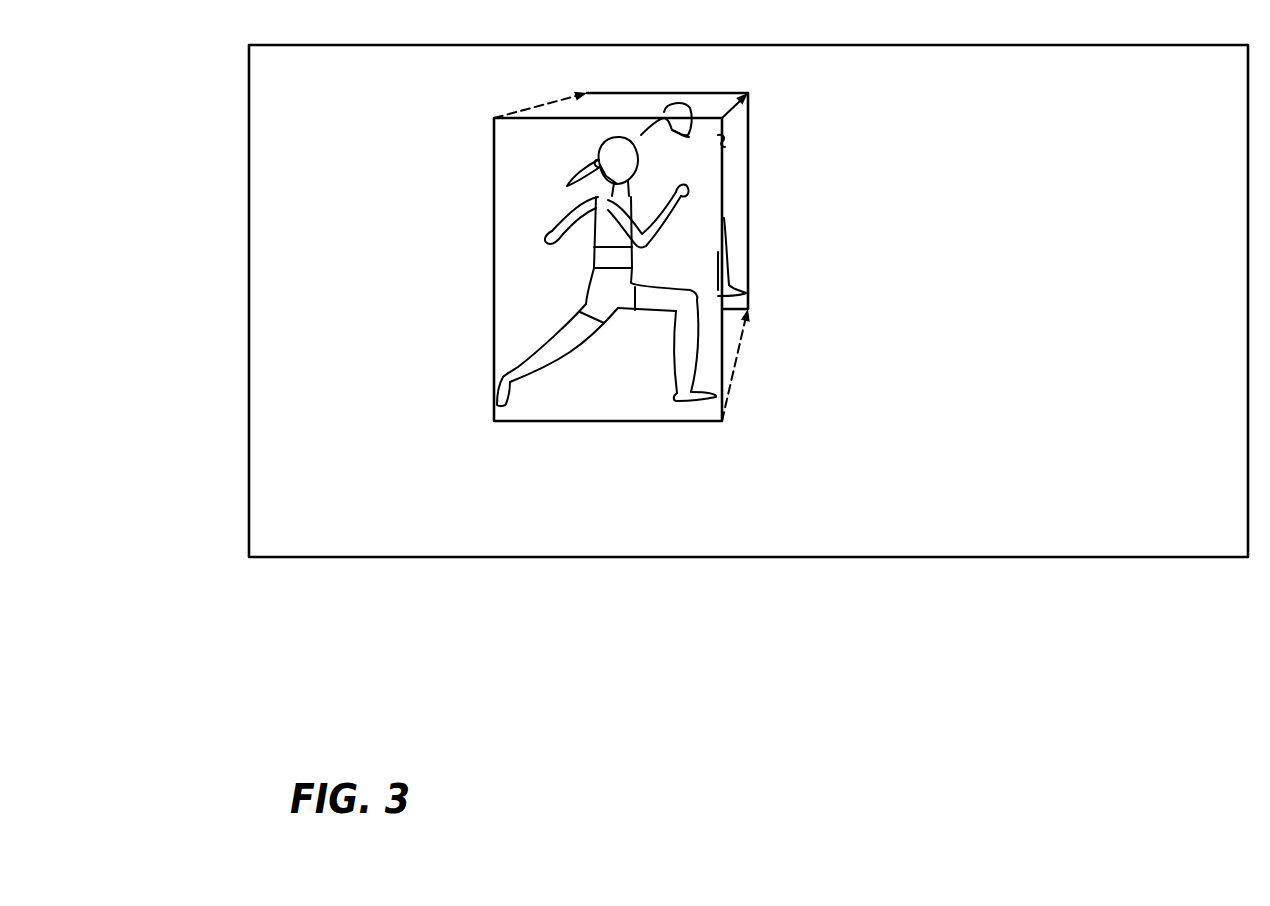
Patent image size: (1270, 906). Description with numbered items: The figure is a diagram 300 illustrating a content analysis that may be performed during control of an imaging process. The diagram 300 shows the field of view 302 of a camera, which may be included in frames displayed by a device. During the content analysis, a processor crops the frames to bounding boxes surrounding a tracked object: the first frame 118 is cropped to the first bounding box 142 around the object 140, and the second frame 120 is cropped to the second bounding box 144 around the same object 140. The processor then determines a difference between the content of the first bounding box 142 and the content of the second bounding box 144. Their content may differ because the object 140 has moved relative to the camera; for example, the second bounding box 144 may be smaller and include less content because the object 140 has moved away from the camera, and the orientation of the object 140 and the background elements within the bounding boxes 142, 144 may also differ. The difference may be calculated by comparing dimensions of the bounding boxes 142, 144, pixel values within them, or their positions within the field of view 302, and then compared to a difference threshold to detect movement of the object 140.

The diagram 300 is at (647, 283).
The field of view 302 is at (330, 45).
The first frame 118 is at (574, 325).
The second frame 120 is at (587, 135).
The object 140 is at (597, 160).
The first bounding box 142 is at (494, 268).
The second bounding box 144 is at (748, 263).